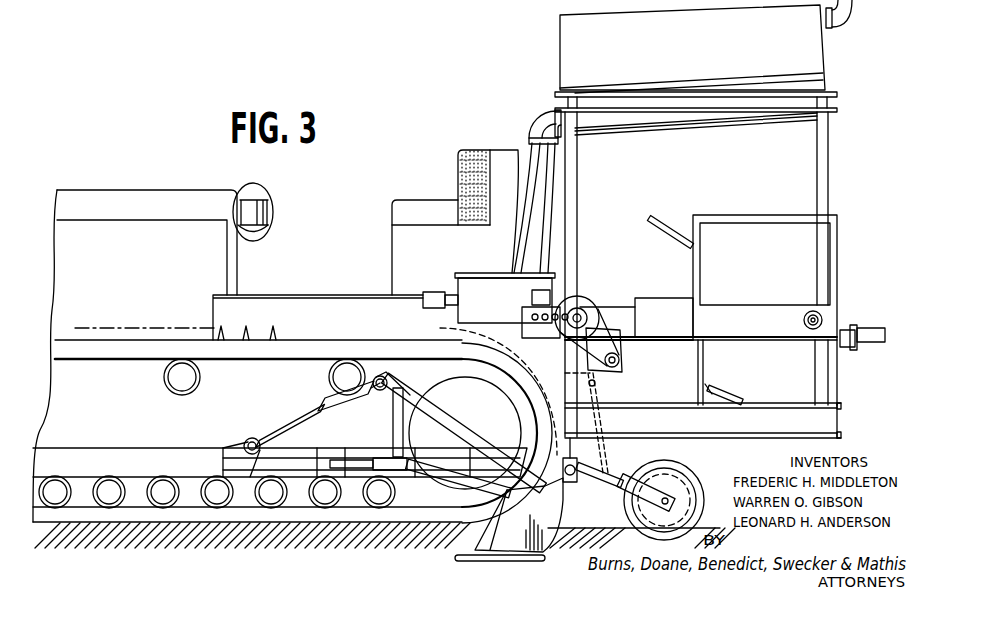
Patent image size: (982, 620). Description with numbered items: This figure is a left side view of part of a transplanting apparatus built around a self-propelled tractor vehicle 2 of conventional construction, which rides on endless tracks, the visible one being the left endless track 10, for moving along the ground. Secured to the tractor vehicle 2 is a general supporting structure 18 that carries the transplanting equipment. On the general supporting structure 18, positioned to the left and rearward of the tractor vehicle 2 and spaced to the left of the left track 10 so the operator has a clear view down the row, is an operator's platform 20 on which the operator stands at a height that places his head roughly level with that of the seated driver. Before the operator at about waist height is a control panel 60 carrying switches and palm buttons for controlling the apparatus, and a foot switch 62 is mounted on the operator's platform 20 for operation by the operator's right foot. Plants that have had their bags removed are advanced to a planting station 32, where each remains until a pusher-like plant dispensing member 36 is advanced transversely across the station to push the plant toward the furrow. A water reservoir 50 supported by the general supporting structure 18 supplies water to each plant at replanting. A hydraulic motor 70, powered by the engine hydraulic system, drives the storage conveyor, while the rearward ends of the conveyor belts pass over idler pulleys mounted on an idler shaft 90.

The tractor vehicle 2 is at (135, 186).
The left endless track 10 is at (263, 522).
The general supporting structure 18 is at (744, 436).
The operator's platform 20 is at (790, 402).
The planting station 32 is at (538, 312).
The plant dispensing member 36 is at (546, 294).
The water reservoir 50 is at (568, 36).
The control panel 60 is at (653, 232).
The foot switch 62 is at (727, 392).
The hydraulic motor 70 is at (840, 330).
The idler shaft 90 is at (623, 345).